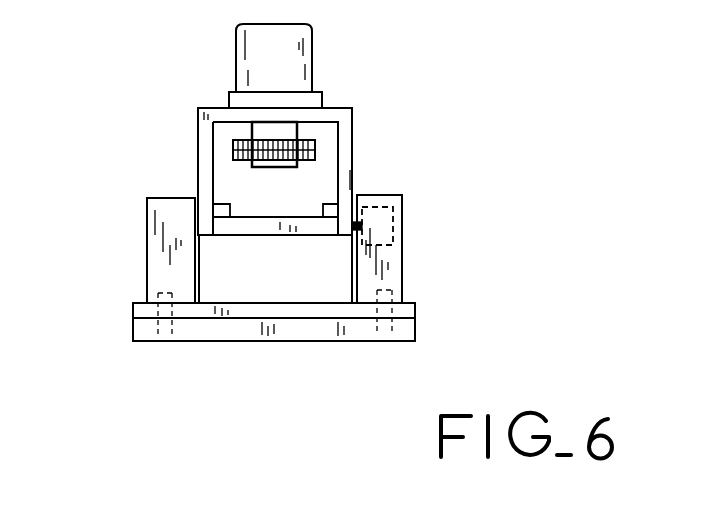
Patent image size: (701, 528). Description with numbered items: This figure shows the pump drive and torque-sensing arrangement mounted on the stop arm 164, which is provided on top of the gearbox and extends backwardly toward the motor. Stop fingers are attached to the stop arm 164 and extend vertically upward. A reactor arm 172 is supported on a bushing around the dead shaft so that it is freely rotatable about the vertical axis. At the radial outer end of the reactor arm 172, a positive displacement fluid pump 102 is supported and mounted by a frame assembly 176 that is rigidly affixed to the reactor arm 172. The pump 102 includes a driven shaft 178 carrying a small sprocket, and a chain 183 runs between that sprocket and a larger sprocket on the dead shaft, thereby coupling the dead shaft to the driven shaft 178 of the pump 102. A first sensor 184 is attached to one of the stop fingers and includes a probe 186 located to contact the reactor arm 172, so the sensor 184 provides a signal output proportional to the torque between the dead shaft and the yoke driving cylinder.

The positive displacement fluid pump 102 is at (298, 50).
The frame assembly 176 is at (342, 135).
The driven shaft 178 is at (267, 128).
The chain 183 is at (233, 150).
The reactor arm 172 is at (272, 227).
The probe 186 is at (353, 233).
The first sensor 184 is at (393, 223).
The stop arm 164 is at (253, 330).